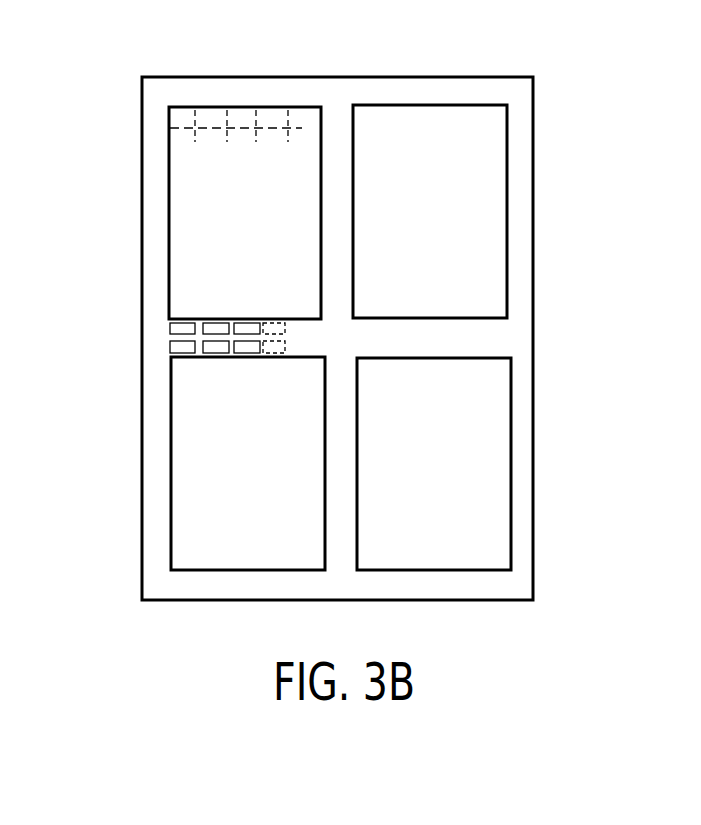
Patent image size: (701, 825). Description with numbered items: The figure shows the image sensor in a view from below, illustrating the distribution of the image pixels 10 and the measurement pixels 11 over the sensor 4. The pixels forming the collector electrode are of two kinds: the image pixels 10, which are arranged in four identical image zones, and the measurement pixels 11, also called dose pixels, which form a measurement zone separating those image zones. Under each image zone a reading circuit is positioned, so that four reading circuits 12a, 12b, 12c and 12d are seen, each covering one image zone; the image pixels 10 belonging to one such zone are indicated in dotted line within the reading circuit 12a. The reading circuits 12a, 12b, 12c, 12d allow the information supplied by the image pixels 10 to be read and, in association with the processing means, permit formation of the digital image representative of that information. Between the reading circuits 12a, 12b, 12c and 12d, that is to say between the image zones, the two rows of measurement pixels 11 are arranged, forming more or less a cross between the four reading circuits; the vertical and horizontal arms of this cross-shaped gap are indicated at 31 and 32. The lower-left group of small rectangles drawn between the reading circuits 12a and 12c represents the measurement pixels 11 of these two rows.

The sheet / substrate 4 is at (126, 80).
The image pixels 10 is at (245, 112).
The scribe line region (vertical) 31 is at (275, 178).
The scribe line region (horizontal) 32 is at (487, 340).
The measurement pixels 11 is at (168, 345).
The reading circuit 12a is at (185, 233).
The reading circuit 12b is at (493, 237).
The reading circuit 12c is at (180, 472).
The reading circuit 12d is at (497, 478).